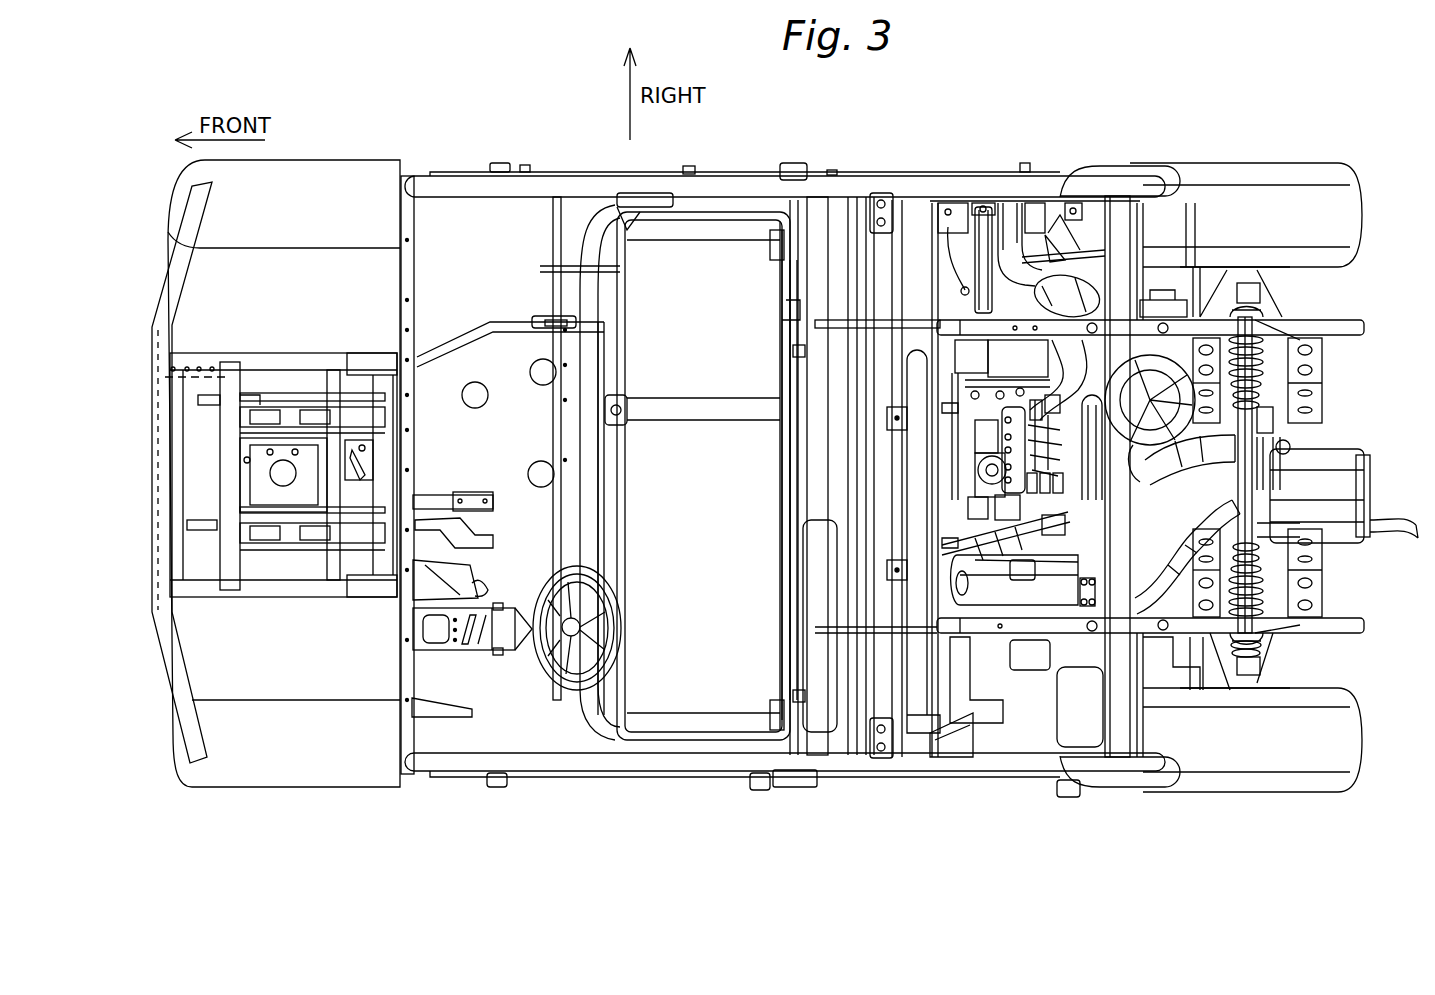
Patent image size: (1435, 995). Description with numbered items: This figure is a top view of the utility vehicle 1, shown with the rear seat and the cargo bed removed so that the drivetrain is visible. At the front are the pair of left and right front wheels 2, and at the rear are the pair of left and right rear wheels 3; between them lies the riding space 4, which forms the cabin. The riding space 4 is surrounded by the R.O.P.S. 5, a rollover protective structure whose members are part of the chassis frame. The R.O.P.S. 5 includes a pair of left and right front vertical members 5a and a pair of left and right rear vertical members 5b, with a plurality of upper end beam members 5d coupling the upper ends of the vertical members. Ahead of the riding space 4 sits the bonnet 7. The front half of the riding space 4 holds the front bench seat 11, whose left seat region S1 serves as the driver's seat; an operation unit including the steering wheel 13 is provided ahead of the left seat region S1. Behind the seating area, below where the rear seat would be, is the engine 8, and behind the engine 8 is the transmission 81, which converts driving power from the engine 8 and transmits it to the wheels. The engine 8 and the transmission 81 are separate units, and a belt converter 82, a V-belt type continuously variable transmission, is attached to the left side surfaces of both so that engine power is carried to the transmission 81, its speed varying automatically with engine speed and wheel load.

The utility vehicle 1 is at (1243, 145).
The front wheels 2 is at (297, 770).
The rear wheels 3 is at (1213, 777).
The riding space 4 is at (848, 196).
The R.O.P.S. 5 is at (577, 152).
The front vertical members 5a is at (430, 186).
The rear vertical members 5b is at (1170, 190).
The upper end beam members 5d is at (750, 190).
The bonnet 7 is at (233, 673).
The engine 8 is at (1032, 508).
The transmission 81 is at (1229, 495).
The belt converter 82 is at (1007, 565).
The front bench seat 11 is at (713, 688).
The steering wheel 13 is at (537, 668).
The left seat region S1 is at (660, 684).